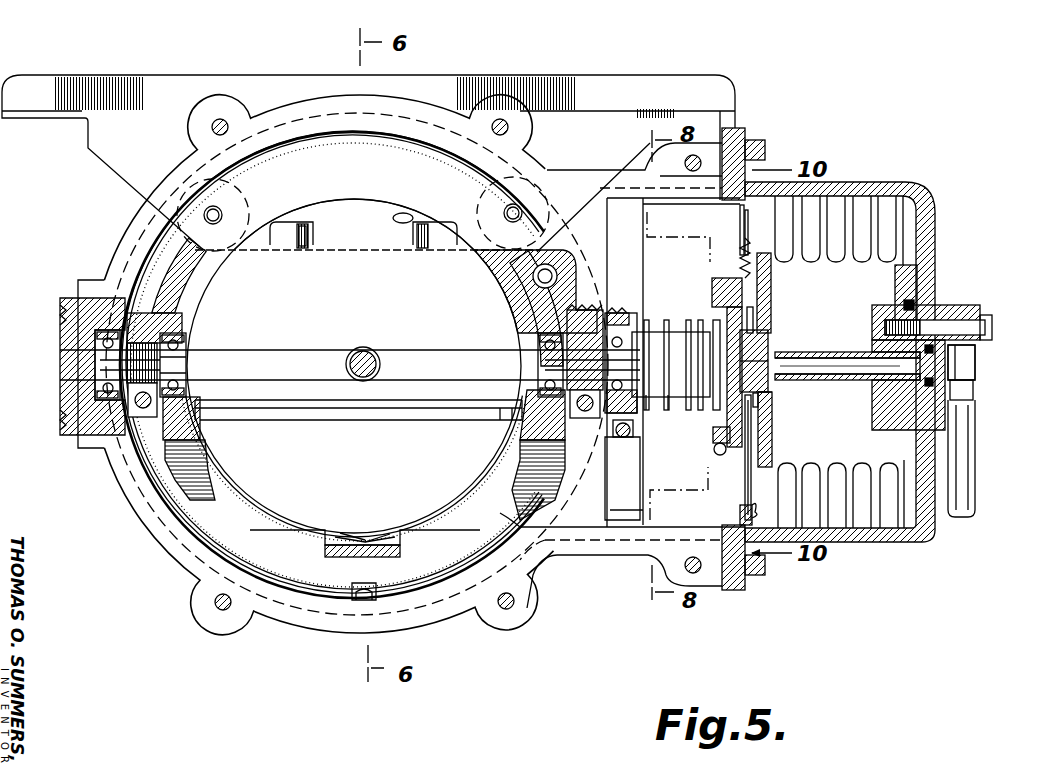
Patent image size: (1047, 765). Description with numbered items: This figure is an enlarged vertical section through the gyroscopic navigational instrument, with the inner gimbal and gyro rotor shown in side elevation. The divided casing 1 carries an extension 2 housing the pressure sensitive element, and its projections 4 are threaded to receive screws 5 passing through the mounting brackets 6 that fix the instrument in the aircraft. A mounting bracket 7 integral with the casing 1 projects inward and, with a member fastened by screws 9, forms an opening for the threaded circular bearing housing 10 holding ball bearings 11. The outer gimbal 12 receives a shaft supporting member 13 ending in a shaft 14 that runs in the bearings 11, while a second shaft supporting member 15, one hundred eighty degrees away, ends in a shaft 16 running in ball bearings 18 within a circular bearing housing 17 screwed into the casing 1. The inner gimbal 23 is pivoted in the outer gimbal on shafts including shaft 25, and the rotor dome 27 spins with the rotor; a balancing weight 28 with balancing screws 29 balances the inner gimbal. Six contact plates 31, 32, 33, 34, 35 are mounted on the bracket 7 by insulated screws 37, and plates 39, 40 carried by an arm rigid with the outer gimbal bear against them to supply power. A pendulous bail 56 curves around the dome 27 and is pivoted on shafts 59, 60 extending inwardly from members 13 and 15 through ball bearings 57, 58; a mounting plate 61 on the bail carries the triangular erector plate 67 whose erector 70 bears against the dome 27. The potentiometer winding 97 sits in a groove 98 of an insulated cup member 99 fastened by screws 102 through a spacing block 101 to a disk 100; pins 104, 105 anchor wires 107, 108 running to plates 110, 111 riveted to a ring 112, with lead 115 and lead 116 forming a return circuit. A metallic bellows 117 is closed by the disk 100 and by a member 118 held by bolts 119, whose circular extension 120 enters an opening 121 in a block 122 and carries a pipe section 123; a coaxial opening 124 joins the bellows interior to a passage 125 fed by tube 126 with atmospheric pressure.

The divided casing 1 is at (155, 548).
The extension 2 is at (870, 182).
The projections 4 is at (240, 205).
The screws 5 is at (222, 210).
The mounting brackets 6 is at (120, 165).
The mounting bracket 7 is at (612, 495).
The screws 9 is at (620, 445).
The circular bearing housing 10 is at (618, 428).
The ball bearings 11 is at (612, 393).
The outer gimbal 12 is at (197, 270).
The shaft supporting member 13 is at (586, 332).
The shaft 14 is at (612, 385).
The second shaft supporting member 15 is at (143, 345).
The shaft 16 is at (97, 373).
The circular bearing housing 17 is at (60, 345).
The ball bearings 18 is at (105, 390).
The inner gimbal 23 is at (361, 370).
The shaft 25 is at (352, 366).
The rotor dome 27 is at (358, 472).
The balancing weight 28 is at (376, 215).
The balancing screws 29 is at (297, 232).
The electrical contact plate 31 is at (646, 340).
The electrical contact plate 32 is at (668, 340).
The electrical contact plate 33 is at (688, 340).
The electrical contact plate 34 is at (700, 340).
The electrical contact plate 35 is at (712, 290).
The insulated screws 37 is at (728, 320).
The contact plate 39 is at (646, 395).
The contact plate 40 is at (668, 395).
The pendulous bail 56 is at (183, 497).
The ball bearings 57 is at (547, 346).
The ball bearings 58 is at (178, 343).
The shaft 59 is at (545, 362).
The shaft 60 is at (172, 365).
The mounting plate 61 is at (402, 550).
The triangular erector plate 67 is at (385, 537).
The erector 70 is at (372, 537).
The potentiometer winding 97 is at (714, 451).
The groove 98 is at (714, 283).
The insulated cup member 99 is at (735, 455).
The disk 100 is at (771, 424).
The spacing block 101 is at (760, 340).
The screws 102 is at (755, 357).
The pin 104 is at (760, 398).
The pin 105 is at (753, 322).
The wire 107 is at (751, 443).
The wire 108 is at (748, 285).
The plate 110 is at (752, 497).
The plate 111 is at (745, 230).
The ring 112 is at (740, 215).
The lead 115 is at (713, 432).
The lead 116 is at (740, 513).
The metallic bellows 117 is at (903, 227).
The member 118 is at (897, 275).
The bolts 119 is at (988, 322).
The circular extension 120 is at (920, 376).
The opening 121 is at (965, 360).
The block 122 is at (955, 303).
The pipe section 123 is at (846, 380).
The coaxial opening 124 is at (845, 352).
The passage 125 is at (965, 390).
The tube 126 is at (962, 445).